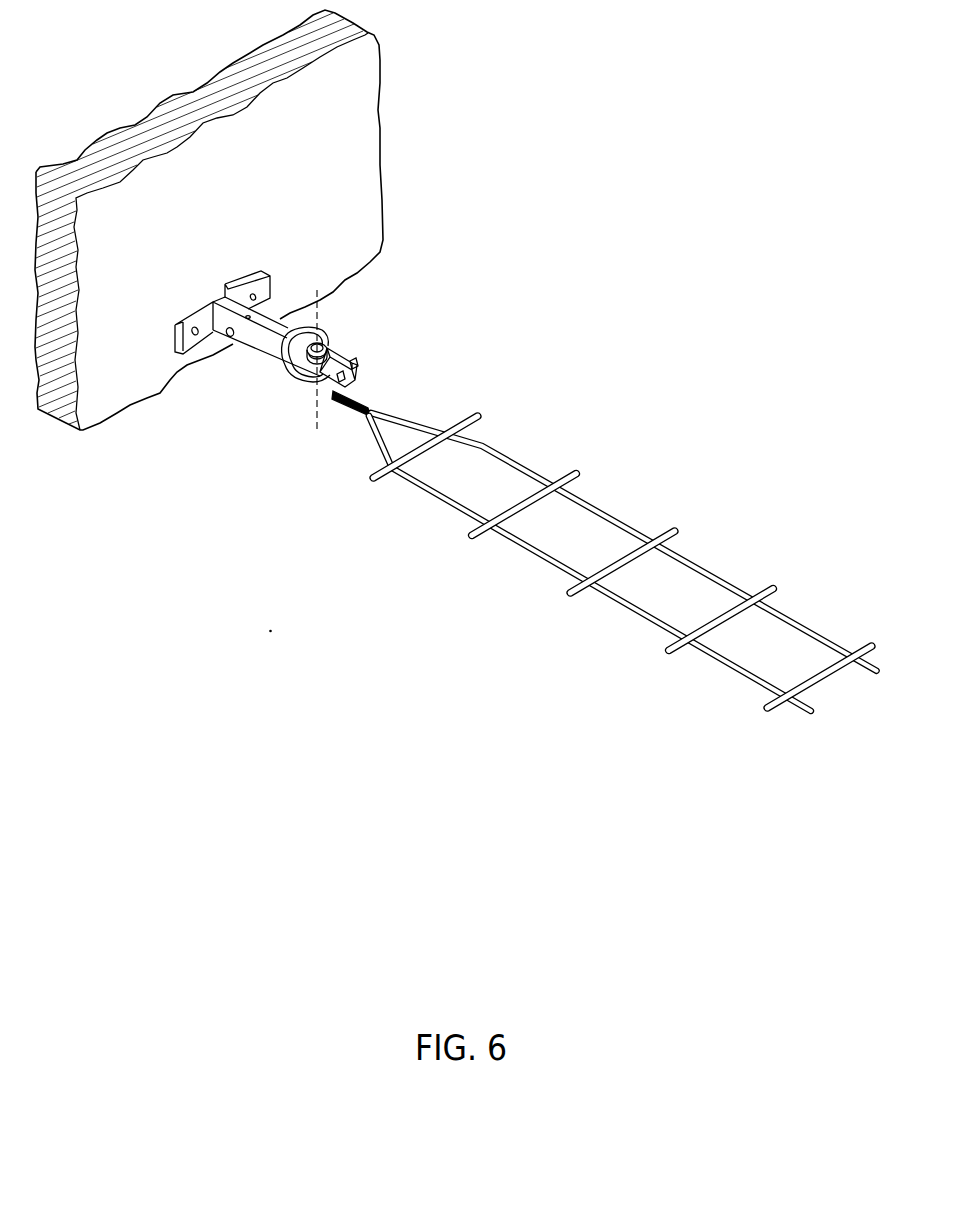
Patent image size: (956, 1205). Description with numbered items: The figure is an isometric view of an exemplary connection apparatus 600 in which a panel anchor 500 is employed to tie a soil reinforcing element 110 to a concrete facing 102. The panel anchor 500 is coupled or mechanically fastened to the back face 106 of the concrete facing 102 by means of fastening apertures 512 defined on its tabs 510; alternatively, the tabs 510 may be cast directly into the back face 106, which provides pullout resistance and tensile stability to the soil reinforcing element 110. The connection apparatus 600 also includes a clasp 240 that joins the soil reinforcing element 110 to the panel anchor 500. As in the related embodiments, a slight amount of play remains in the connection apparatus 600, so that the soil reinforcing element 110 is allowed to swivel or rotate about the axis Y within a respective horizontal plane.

The concrete facing 102 is at (350, 180).
The back face 106 is at (259, 240).
The soil reinforcing element 110 is at (604, 512).
The clasp 240 is at (287, 372).
The panel anchor 500 is at (256, 354).
The tabs 510 is at (225, 286).
The fastening apertures 512 is at (258, 296).
The connection apparatus 600 is at (408, 272).